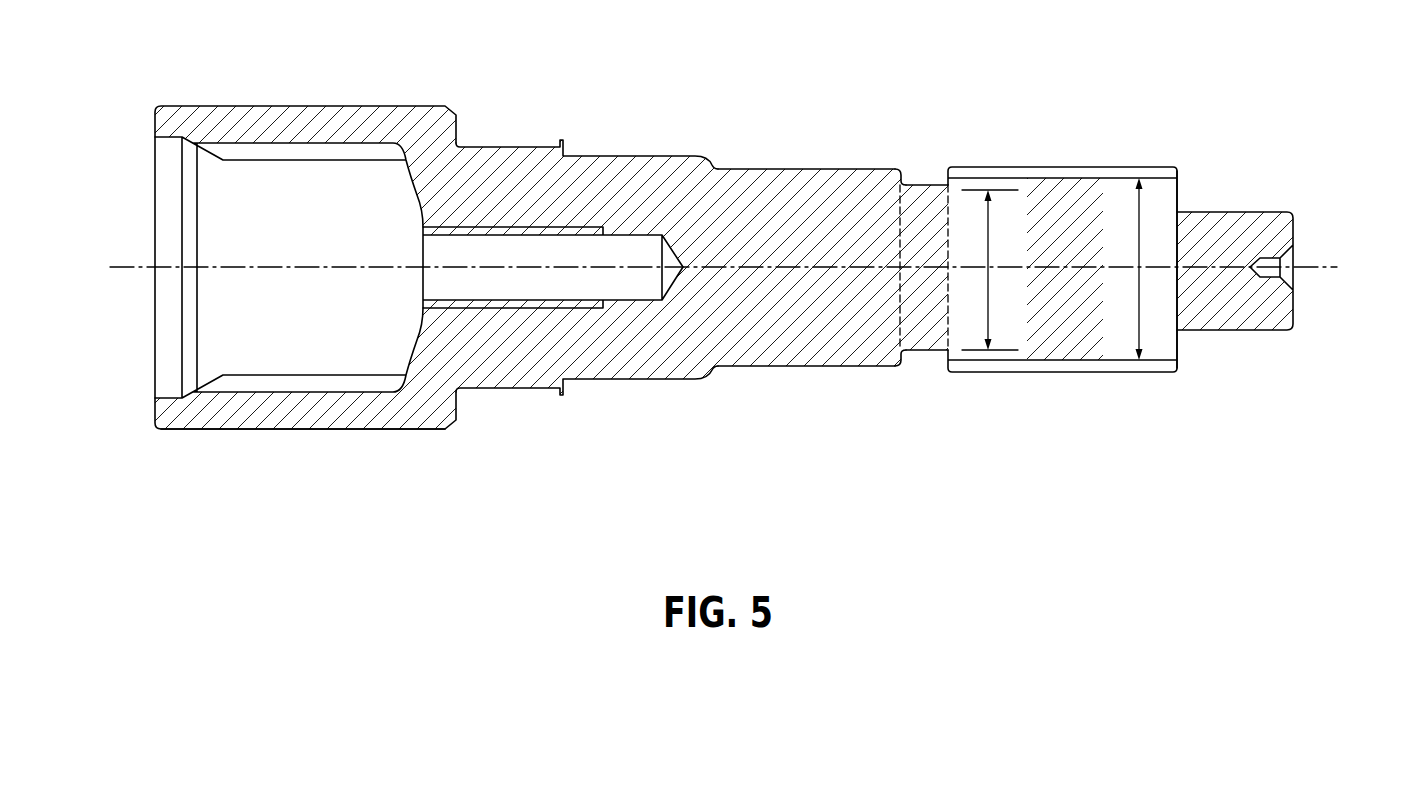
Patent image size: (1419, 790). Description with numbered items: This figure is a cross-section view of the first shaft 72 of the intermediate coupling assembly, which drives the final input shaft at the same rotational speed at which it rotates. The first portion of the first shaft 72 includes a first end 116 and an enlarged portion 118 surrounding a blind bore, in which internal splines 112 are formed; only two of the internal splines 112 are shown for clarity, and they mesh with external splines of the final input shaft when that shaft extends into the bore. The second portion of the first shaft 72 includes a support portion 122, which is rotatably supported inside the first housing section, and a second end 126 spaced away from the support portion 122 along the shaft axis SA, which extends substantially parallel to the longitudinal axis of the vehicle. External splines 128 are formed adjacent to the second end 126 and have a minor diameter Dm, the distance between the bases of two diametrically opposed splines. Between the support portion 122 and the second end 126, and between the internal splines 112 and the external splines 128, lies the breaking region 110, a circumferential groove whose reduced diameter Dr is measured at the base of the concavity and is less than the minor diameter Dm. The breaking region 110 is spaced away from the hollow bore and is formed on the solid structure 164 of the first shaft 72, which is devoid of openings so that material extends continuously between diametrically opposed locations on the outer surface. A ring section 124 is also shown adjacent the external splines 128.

The first shaft 72 is at (722, 104).
The breaking region 110 is at (923, 340).
The internal splines 112 is at (242, 160).
The first end 116 is at (150, 423).
The enlarged portion 118 is at (293, 430).
The support portion 122 is at (502, 158).
The retaining ring section 124 is at (1063, 340).
The second end 126 is at (1293, 248).
The external splines 128 is at (1146, 373).
The solid structure 164 is at (1173, 146).
The reduced diameter Dr is at (990, 312).
The minor diameter Dm is at (1137, 243).
The shaft axis SA is at (1318, 268).